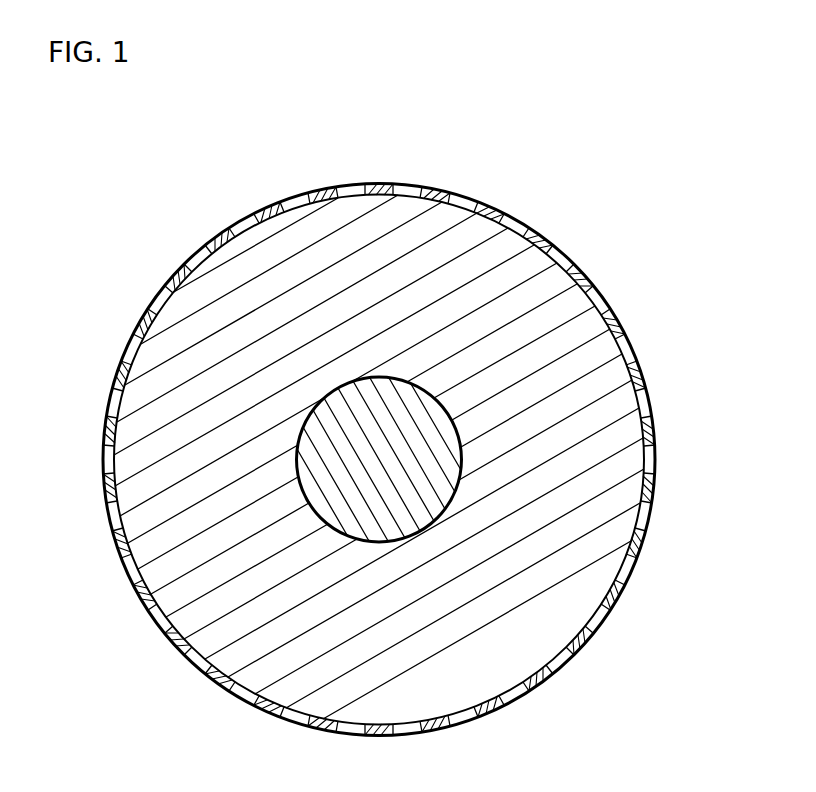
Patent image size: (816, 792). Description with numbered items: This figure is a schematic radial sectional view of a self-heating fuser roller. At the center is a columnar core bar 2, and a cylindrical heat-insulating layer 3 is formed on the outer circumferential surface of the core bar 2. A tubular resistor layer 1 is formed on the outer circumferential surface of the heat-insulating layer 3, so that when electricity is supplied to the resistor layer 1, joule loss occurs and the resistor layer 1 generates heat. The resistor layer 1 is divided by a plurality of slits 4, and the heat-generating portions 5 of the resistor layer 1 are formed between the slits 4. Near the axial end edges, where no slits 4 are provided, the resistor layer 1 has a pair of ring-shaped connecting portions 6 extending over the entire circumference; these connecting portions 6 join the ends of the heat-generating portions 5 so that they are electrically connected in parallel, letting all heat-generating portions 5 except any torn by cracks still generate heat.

The resistor layer 1 is at (383, 180).
The core bar 2 is at (375, 450).
The heat-insulating layer 3 is at (217, 412).
The slits 4 is at (530, 223).
The heat-generating portions 5 is at (627, 312).
The ring-shaped connecting portions 6 is at (633, 348).